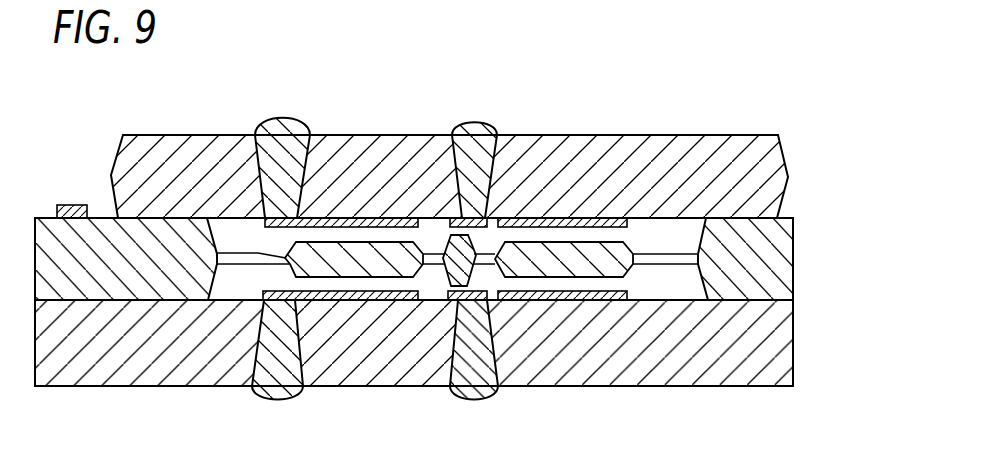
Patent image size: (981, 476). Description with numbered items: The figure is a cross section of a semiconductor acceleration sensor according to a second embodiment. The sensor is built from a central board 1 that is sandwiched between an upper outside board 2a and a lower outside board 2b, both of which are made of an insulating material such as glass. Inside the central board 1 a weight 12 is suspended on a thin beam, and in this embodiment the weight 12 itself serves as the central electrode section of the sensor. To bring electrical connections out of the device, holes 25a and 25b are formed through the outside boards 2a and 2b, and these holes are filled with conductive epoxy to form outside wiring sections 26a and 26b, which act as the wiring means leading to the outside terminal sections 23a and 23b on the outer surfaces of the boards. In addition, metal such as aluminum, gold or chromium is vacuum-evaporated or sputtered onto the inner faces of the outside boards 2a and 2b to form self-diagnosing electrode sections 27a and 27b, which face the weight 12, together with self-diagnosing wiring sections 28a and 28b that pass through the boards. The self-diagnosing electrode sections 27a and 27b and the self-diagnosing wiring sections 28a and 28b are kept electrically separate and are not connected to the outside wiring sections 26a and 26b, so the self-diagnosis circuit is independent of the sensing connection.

The central board 1 is at (777, 262).
The outside board 2a is at (767, 182).
The outside board 2b is at (772, 342).
The weight 12 is at (305, 263).
The outside terminal section 23a is at (467, 158).
The outside terminal section 23b is at (483, 390).
The hole 25a is at (510, 150).
The hole 25b is at (493, 358).
The outside wiring section 26a is at (448, 137).
The outside wiring section 26b is at (460, 352).
The self-diagnosing electrode section 27a is at (338, 220).
The self-diagnosing electrode section 27b is at (347, 297).
The self-diagnosing wiring section 28a is at (267, 147).
The self-diagnosing wiring section 28b is at (275, 375).